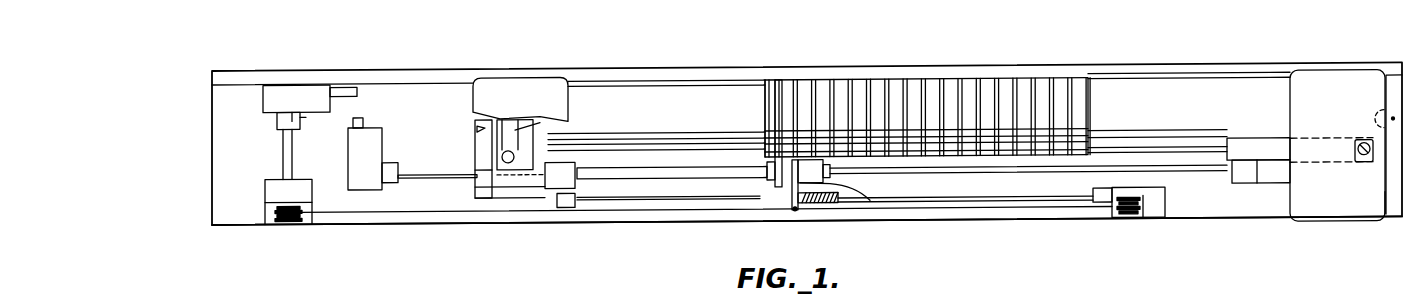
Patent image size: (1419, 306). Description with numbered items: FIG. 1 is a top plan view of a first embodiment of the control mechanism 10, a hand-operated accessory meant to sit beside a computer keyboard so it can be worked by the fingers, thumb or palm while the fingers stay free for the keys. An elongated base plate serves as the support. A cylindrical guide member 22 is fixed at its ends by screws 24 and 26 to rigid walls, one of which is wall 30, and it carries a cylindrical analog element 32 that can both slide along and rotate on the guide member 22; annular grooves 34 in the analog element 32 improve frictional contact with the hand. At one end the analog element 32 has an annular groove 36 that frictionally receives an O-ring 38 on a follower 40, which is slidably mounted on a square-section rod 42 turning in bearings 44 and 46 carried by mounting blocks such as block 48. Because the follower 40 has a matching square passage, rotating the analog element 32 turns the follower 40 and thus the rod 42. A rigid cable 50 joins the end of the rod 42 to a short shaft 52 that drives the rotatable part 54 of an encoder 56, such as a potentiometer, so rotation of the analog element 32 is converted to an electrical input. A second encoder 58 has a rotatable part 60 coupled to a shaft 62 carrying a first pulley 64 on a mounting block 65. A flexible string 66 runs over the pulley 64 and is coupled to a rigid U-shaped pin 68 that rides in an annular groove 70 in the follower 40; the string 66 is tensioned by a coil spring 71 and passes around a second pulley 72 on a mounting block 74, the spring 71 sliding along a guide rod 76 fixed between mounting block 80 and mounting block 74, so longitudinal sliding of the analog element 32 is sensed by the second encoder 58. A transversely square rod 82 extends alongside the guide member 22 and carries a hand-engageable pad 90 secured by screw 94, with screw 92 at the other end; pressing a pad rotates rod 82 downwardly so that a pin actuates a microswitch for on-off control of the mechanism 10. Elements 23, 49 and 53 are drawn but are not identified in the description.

The control mechanism 10 is at (667, 65).
The cylindrical guide member 22 is at (1123, 104).
The guide 23 is at (477, 190).
The screw 24 is at (477, 130).
The screw 26 is at (1387, 124).
The rigid wall 30 is at (1390, 204).
The cylindrical analog element 32 is at (933, 102).
The annular grooves 34 is at (900, 102).
The annular groove 36 is at (778, 87).
The O-ring 38 is at (772, 187).
The follower 40 is at (867, 202).
The rod 42 is at (1015, 174).
The bearing 44 is at (577, 186).
The bearing 46 is at (1233, 182).
The mounting block 48 is at (563, 170).
The pin 49 is at (1245, 184).
The rigid cable 50 is at (517, 182).
The short shaft 52 is at (433, 175).
The cover 53 is at (512, 94).
The rotatable part 54 is at (395, 165).
The encoder 56 is at (372, 133).
The second encoder 58 is at (283, 92).
The rotatable part 60 is at (300, 121).
The shaft 62 is at (282, 158).
The first pulley 64 is at (292, 224).
The mounting block 65 is at (270, 193).
The flexible cable or string 66 is at (395, 216).
The U-shaped pin 68 is at (770, 187).
The annular groove 70 is at (765, 171).
The coil spring 71 is at (822, 207).
The second pulley 72 is at (1137, 222).
The mounting block 74 is at (1160, 209).
The rod 76 is at (940, 205).
The mounting block 80 is at (568, 206).
The transversely square rod 82 is at (1247, 154).
The hand-engageable pad 90 is at (1308, 100).
The screw 92 is at (507, 157).
The screw 94 is at (1360, 168).